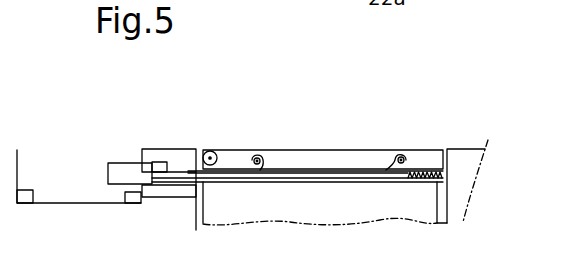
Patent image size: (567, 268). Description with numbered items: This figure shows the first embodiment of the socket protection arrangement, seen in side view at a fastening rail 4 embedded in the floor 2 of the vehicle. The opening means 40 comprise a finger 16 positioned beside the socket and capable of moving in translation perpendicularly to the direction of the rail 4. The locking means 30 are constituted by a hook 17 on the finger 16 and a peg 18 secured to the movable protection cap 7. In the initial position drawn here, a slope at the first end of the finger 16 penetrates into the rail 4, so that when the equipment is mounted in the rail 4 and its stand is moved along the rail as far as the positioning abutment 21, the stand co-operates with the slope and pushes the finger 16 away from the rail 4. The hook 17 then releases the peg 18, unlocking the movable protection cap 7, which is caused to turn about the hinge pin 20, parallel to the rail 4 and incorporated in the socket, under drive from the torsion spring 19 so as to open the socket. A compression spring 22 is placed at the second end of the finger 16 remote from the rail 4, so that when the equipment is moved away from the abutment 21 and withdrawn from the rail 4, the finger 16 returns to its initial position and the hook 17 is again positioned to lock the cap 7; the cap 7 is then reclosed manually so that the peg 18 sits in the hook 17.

The floor 2 is at (186, 148).
The fastening rail 4 is at (77, 192).
The movable protection cap 7 is at (324, 150).
The finger 16 is at (177, 176).
The hook 17 is at (403, 160).
The peg 18 is at (382, 181).
The torsion spring 19 is at (218, 162).
The hinge pin 20 is at (210, 157).
The positioning abutment 21 is at (26, 200).
The compression spring 22 is at (448, 172).
The locking means 30 is at (405, 127).
The opening means 40 is at (120, 133).